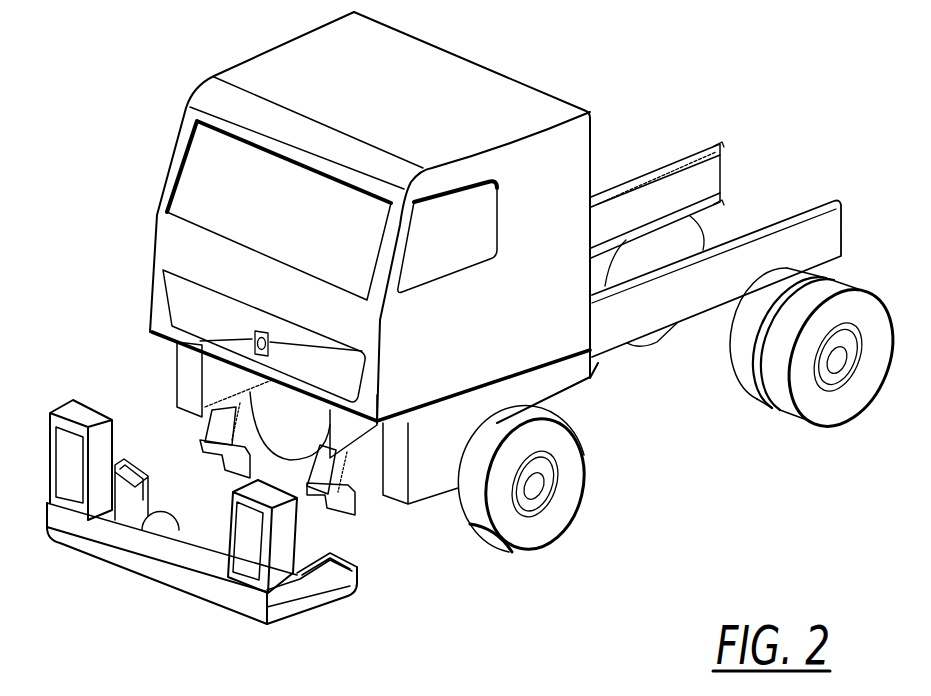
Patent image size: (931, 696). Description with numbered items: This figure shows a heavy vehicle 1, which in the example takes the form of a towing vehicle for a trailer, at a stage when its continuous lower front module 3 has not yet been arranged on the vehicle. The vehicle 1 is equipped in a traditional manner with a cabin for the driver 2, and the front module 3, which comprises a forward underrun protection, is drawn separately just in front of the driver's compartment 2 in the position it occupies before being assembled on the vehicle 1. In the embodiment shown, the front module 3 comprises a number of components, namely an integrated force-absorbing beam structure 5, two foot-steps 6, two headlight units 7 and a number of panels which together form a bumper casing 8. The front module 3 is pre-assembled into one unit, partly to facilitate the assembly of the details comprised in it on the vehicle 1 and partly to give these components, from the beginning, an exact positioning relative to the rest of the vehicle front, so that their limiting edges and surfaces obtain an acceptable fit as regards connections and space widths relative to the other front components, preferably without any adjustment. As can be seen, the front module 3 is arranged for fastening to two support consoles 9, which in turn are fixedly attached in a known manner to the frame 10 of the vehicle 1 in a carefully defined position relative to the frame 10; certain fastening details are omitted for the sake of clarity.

The heavy vehicle 1 is at (256, 39).
The cabin for the driver 2 is at (235, 66).
The front module 3 is at (144, 599).
The force-absorbing beam structure 5 is at (142, 522).
The foot-steps 6 is at (130, 463).
The headlight units 7 is at (67, 470).
The bumper casing 8 is at (204, 578).
The support consoles 9 is at (207, 440).
The frame 10 is at (192, 362).